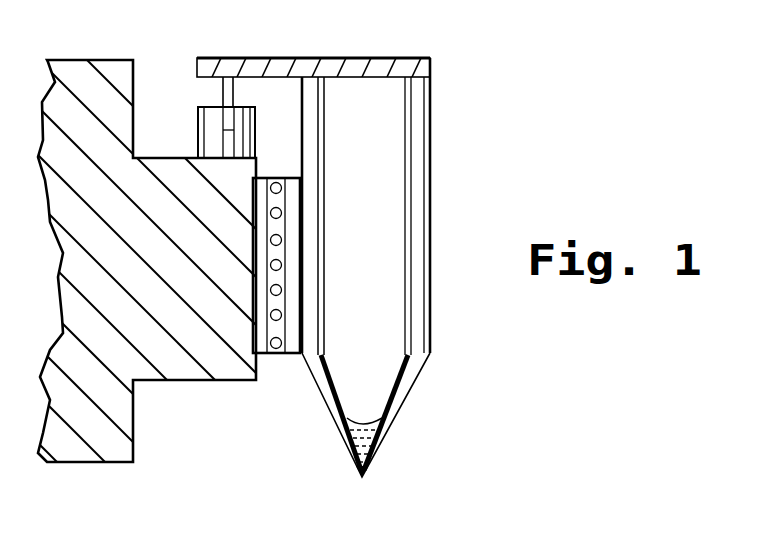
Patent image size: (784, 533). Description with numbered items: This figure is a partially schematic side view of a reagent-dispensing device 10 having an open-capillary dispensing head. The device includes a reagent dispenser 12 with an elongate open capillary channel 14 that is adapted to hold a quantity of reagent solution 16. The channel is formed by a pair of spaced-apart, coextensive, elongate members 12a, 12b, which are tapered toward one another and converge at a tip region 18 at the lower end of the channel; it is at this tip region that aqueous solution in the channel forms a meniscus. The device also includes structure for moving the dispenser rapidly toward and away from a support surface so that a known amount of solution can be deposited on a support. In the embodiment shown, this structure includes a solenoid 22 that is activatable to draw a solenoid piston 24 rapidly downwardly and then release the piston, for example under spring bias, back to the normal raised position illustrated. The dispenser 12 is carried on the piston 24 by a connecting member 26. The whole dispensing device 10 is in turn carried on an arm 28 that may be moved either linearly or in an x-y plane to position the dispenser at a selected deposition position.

The reagent-dispensing device 10 is at (414, 291).
The reagent dispenser 12 is at (447, 236).
The elongate member 12a is at (431, 333).
The elongate member 12b is at (364, 273).
The open capillary channel 14 is at (384, 397).
The reagent solution 16 is at (372, 440).
The tip region 18 is at (366, 478).
The solenoid 22 is at (201, 120).
The solenoid piston 24 is at (224, 92).
The connecting member 26 is at (255, 66).
The arm 28 is at (170, 360).